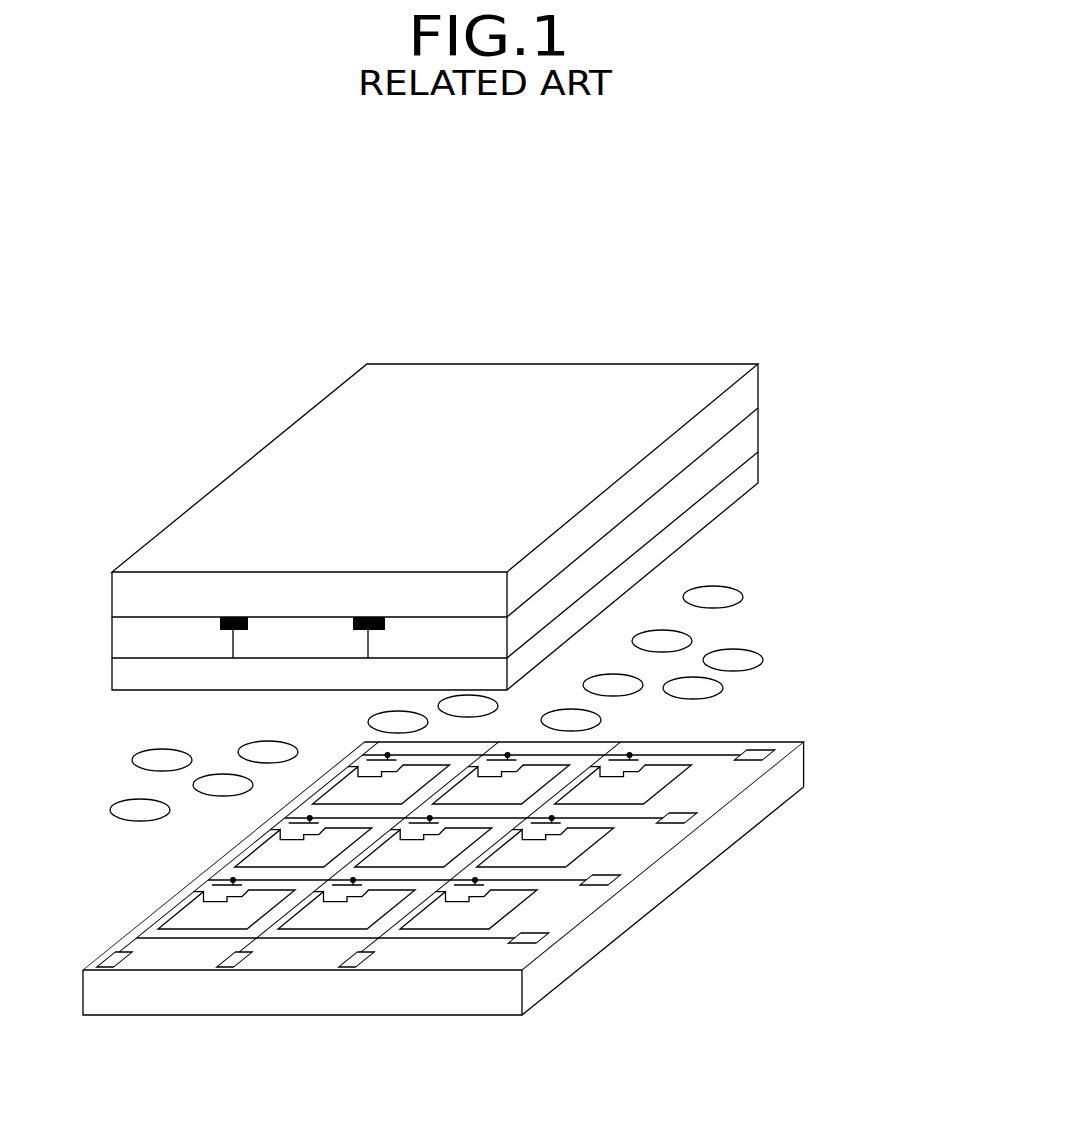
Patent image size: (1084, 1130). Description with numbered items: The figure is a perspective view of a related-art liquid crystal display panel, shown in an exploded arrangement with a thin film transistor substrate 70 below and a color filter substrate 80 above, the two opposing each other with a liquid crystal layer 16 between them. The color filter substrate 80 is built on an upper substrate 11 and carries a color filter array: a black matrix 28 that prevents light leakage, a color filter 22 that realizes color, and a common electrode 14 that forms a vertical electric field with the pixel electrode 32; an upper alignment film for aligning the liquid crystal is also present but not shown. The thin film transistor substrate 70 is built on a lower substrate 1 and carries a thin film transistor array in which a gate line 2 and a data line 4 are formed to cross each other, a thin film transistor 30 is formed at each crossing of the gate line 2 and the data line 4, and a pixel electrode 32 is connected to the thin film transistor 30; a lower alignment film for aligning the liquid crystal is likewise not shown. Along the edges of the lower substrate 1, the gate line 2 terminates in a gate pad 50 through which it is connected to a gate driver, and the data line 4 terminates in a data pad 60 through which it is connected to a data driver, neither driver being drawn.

The color filter substrate 80 is at (882, 352).
The upper substrate 11 is at (758, 390).
The color filter 22 is at (758, 432).
The common electrode 14 is at (758, 468).
The black matrix 28 is at (233, 631).
The liquid crystal layer 16 is at (737, 597).
The thin film transistor substrate 70 is at (895, 736).
The lower substrate 1 is at (795, 765).
The gate line 2 is at (300, 940).
The data line 4 is at (376, 942).
The thin film transistor 30 is at (552, 818).
The pixel electrode 32 is at (530, 897).
The gate pad 50 is at (547, 942).
The data pad 60 is at (228, 968).